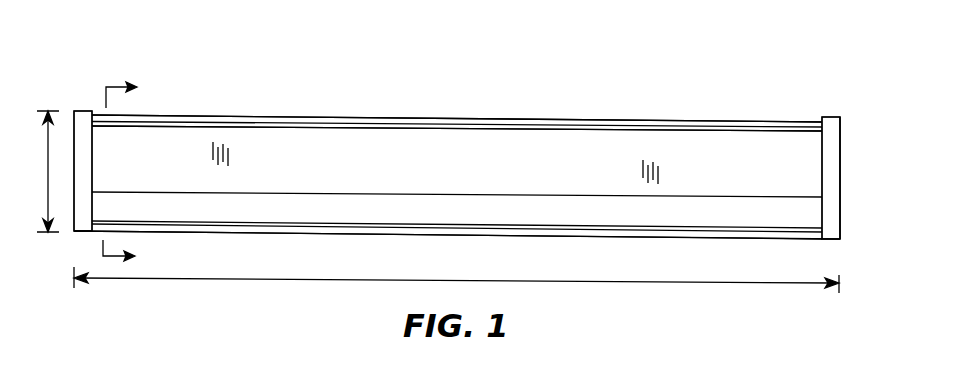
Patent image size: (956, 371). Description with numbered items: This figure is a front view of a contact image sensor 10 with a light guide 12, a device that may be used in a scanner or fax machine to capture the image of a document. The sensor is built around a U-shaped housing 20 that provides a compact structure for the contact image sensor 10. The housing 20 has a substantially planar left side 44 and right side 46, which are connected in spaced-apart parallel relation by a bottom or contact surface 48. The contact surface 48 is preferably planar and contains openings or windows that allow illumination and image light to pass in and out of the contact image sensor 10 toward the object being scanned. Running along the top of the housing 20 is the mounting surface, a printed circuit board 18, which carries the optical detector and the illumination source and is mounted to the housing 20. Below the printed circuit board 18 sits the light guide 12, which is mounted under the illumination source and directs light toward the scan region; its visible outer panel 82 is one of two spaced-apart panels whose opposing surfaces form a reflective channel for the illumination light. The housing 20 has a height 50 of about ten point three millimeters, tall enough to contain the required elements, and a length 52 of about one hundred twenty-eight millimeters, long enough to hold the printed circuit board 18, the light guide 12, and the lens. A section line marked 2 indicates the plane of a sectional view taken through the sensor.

The contact image sensor 10 is at (173, 63).
The section line 2 is at (107, 85).
The light guide 12 is at (798, 170).
The printed circuit board 18 is at (395, 117).
The outer panel 82 is at (592, 150).
The left side 44 is at (77, 110).
The right side 46 is at (828, 117).
The housing 20 is at (840, 210).
The contact surface 48 is at (827, 240).
The height 50 is at (48, 190).
The length 52 is at (298, 281).